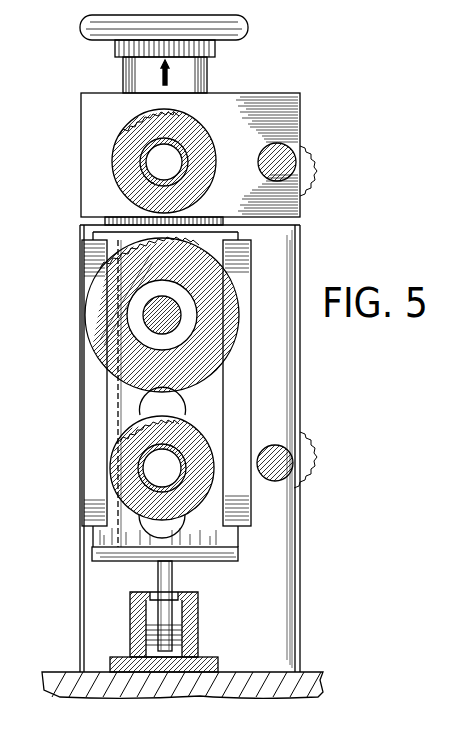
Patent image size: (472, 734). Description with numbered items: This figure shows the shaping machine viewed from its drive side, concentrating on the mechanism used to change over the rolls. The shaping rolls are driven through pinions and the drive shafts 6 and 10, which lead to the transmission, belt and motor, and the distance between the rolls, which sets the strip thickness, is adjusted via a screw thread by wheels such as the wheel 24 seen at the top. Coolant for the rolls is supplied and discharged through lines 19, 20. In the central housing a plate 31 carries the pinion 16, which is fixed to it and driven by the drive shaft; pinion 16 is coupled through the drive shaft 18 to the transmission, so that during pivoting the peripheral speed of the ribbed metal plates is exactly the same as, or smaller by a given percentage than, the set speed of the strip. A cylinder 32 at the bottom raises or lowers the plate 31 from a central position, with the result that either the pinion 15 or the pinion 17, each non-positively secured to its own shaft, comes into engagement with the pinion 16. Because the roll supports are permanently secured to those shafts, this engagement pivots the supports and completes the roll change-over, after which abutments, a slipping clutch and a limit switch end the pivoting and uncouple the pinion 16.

The wheel 24 is at (232, 25).
The pinion 15 is at (134, 143).
The line 19 is at (144, 165).
The drive shaft 6 is at (283, 157).
The pinion 16 is at (108, 310).
The drive shaft 18 is at (168, 303).
The plate 31 is at (118, 405).
The pinion 17 is at (124, 472).
The line 20 is at (145, 480).
The drive shaft 10 is at (283, 470).
The cylinder 32 is at (136, 636).